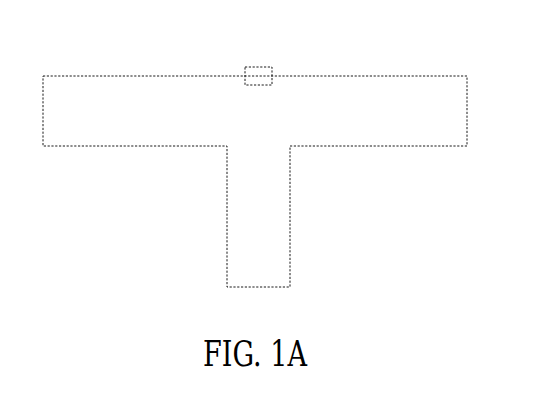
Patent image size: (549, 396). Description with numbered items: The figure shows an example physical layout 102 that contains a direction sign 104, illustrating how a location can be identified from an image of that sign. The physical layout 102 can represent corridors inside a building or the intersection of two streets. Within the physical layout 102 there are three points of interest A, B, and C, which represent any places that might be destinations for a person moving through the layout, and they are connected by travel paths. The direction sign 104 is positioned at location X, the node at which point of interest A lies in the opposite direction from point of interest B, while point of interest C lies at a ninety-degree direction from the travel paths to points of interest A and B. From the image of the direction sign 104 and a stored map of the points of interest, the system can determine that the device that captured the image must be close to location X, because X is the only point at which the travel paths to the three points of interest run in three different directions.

The physical layout 102 is at (255, 149).
The direction sign 104 is at (279, 52).
The location X is at (258, 115).
The POI A is at (79, 113).
The POI B is at (433, 113).
The POI C is at (256, 263).